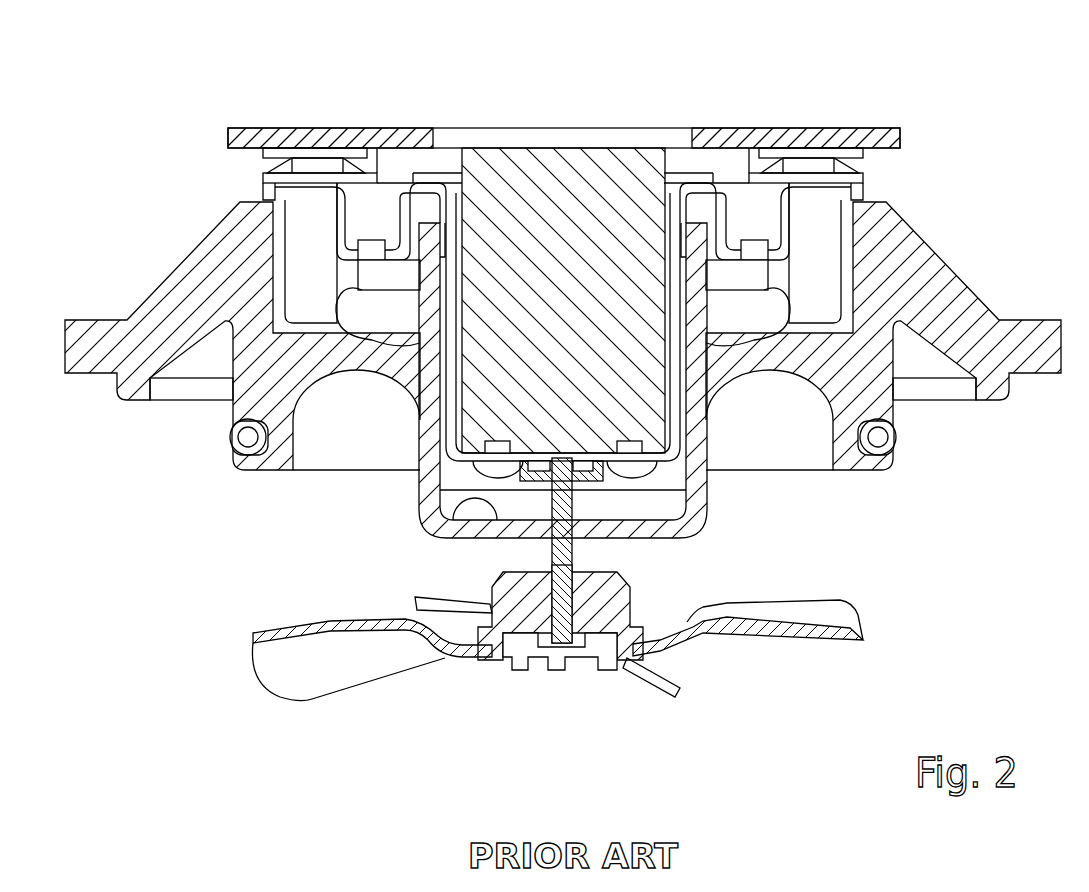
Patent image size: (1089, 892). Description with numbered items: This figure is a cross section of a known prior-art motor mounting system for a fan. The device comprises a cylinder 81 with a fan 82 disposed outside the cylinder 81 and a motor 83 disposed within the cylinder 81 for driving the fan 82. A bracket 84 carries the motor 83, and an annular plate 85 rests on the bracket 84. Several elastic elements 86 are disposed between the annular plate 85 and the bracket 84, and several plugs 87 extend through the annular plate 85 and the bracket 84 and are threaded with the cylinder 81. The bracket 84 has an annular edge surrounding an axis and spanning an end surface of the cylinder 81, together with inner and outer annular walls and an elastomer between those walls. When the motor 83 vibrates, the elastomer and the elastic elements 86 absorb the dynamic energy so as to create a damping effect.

The cylinder 81 is at (428, 497).
The fan 82 is at (795, 645).
The motor 83 is at (553, 155).
The bracket 84 is at (863, 181).
The annular plate 85 is at (828, 128).
The elastic elements 86 is at (263, 181).
The plugs 87 is at (313, 152).